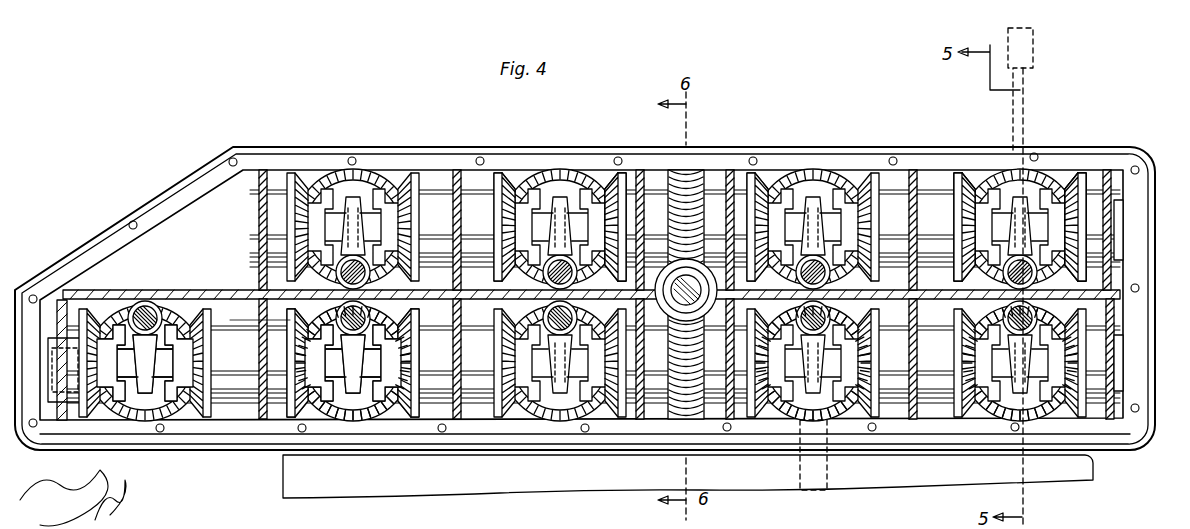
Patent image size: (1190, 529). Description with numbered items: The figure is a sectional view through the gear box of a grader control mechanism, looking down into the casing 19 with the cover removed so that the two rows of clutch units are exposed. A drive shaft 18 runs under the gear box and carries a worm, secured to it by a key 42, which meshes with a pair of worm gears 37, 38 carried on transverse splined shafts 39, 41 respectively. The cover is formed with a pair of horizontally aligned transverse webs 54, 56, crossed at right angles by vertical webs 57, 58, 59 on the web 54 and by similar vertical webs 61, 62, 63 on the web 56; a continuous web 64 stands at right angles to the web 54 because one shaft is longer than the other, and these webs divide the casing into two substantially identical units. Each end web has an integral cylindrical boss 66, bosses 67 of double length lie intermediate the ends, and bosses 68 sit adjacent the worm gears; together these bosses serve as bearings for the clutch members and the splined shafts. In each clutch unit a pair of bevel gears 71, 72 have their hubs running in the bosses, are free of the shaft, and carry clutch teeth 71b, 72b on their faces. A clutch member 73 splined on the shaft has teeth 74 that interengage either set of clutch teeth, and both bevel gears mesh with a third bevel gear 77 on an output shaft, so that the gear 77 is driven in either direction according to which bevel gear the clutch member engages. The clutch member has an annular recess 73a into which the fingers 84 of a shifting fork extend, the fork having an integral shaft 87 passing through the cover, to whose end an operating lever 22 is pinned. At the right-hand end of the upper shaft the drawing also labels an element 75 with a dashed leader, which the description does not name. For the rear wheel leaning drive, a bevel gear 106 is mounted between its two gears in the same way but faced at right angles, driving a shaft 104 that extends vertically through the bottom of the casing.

The casing 19 is at (388, 147).
The bosses of double length 67 is at (440, 195).
The transverse web 54 is at (250, 290).
The continuous web 64 is at (70, 312).
The cylindrical boss 66 is at (273, 192).
The cylindrical bosses 68 is at (640, 175).
The vertical web 58 is at (456, 278).
The key 42 is at (575, 305).
The vertical web 62 is at (913, 289).
The clutch teeth 71b is at (960, 222).
The worm gear 37 is at (703, 176).
The worm gear 38 is at (686, 408).
The drive shaft 18 is at (718, 292).
The splined shaft 39 is at (330, 210).
The annular recess 73a is at (835, 200).
The bevel gear 77 is at (535, 195).
The shaft 87 is at (150, 318).
The transverse web 56 is at (1040, 318).
The bevel gear 71 is at (505, 190).
The bevel gear 72 is at (612, 185).
The clutch teeth 72b is at (1068, 195).
The fingers 84 is at (148, 400).
The splined shaft 41 is at (318, 410).
The clutch member 73 is at (1072, 270).
The teeth 74 is at (990, 265).
The vertical web 61 is at (782, 268).
The vertical web 59 is at (612, 268).
The vertical web 57 is at (260, 319).
The bevel gear 106 is at (790, 400).
The shaft 104 is at (815, 492).
The vertical web 63 is at (1118, 412).
The shaft end 75 is at (1115, 197).
The operating lever 22 is at (1034, 50).